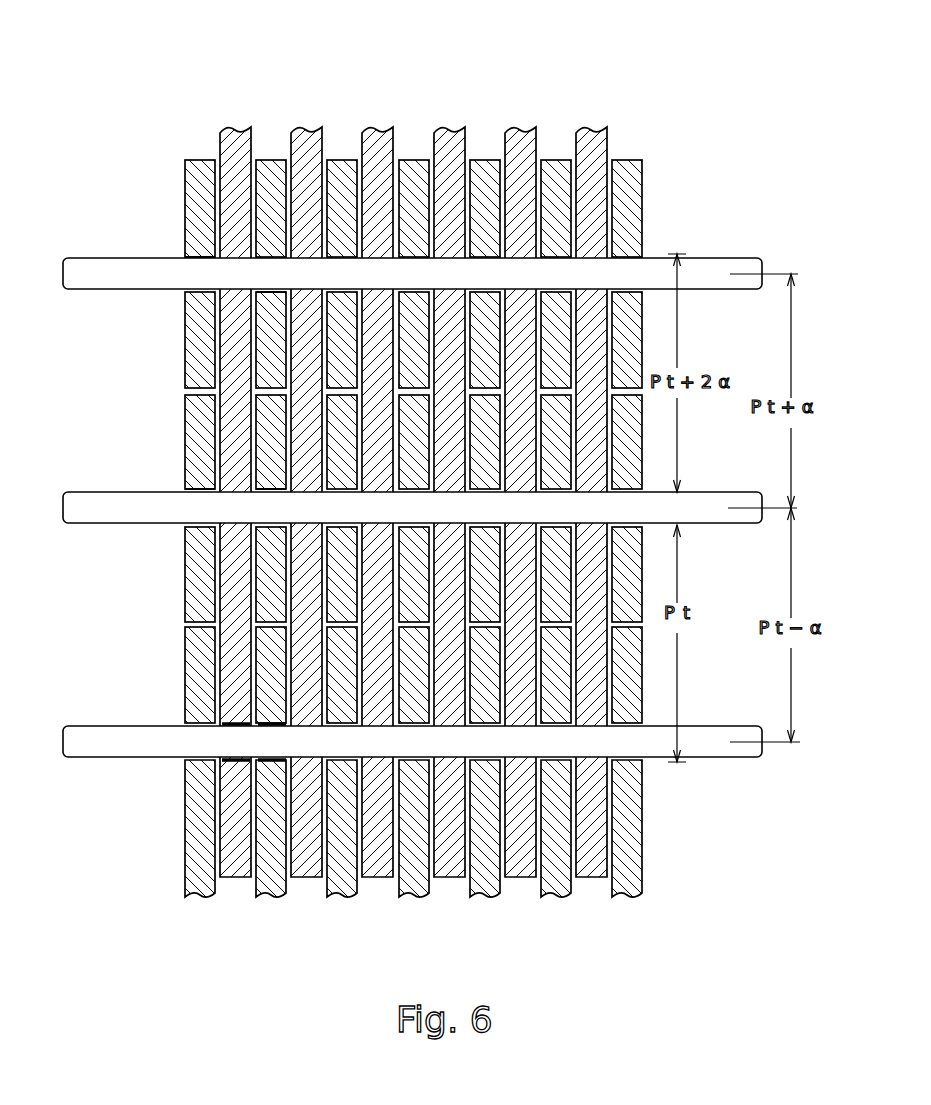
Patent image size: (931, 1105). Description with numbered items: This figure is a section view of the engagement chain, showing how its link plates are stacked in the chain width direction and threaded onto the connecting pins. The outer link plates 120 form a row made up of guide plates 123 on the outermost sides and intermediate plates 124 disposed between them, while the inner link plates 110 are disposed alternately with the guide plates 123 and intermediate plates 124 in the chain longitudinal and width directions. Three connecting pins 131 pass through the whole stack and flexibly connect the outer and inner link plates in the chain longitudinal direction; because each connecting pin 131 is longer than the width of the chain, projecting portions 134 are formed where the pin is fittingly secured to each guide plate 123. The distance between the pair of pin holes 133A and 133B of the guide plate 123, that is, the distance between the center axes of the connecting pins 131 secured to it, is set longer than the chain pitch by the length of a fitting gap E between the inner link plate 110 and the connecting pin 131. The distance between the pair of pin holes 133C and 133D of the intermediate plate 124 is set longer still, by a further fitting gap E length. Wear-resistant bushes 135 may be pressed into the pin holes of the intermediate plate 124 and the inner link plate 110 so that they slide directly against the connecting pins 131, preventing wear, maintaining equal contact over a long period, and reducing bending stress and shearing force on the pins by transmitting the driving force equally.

The inner link plate 110 is at (236, 868).
The outer link plate 120 is at (412, 460).
The guide plate 123 is at (198, 168).
The intermediate plate 124 is at (271, 168).
The connecting pin 131 is at (198, 280).
The pin hole 133A is at (182, 255).
The pin hole 133B is at (185, 490).
The pin hole 133C is at (275, 289).
The pin hole 133D is at (273, 490).
The projecting portion 134 is at (103, 267).
The wear-resistant bush 135 is at (280, 723).
The fitting gap E is at (555, 255).